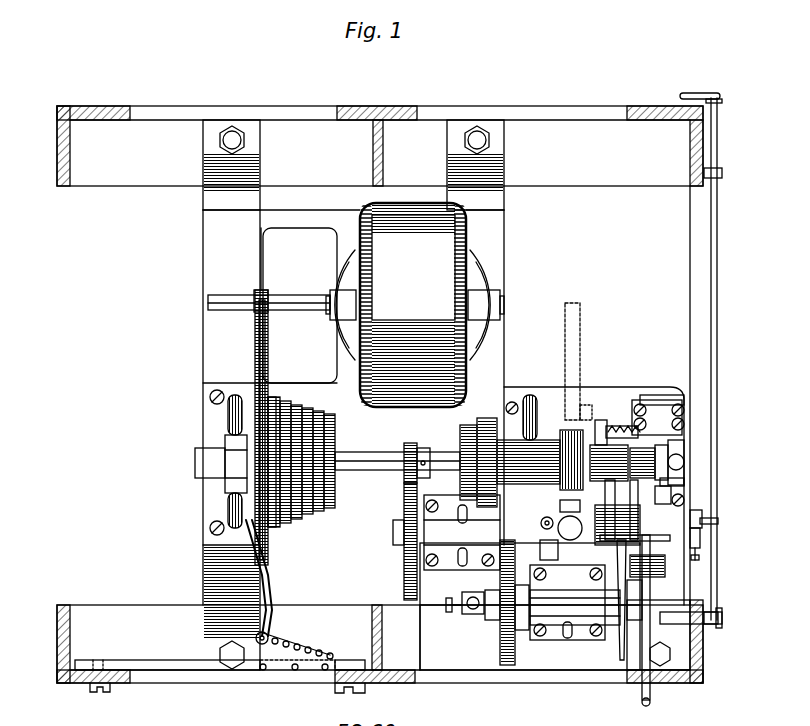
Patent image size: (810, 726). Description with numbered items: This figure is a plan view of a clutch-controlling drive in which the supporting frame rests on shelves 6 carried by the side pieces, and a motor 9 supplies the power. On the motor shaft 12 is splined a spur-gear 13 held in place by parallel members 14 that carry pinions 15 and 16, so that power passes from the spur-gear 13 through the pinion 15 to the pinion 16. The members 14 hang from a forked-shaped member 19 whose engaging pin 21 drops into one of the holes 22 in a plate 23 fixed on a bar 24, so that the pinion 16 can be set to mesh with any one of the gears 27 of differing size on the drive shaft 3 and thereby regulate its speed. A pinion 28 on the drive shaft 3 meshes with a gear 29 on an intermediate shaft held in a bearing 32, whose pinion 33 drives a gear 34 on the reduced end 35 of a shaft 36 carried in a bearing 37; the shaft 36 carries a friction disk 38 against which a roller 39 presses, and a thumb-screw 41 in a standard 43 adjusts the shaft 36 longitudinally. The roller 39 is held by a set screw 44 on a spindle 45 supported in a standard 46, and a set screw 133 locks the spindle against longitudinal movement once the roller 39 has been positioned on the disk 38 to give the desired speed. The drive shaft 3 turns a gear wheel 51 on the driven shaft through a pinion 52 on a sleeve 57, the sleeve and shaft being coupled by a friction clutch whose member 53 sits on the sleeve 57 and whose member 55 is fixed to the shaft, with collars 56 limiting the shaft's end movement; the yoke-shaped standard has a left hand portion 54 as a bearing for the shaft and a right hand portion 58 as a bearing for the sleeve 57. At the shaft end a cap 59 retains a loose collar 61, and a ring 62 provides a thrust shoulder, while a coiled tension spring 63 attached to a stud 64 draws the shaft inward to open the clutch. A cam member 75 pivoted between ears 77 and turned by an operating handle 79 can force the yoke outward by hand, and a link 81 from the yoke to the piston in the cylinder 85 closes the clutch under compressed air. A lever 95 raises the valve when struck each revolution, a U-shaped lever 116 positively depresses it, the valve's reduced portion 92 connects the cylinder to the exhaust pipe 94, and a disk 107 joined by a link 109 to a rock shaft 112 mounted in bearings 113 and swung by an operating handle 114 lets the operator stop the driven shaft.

The drive shaft 3 is at (362, 460).
The shelves 6 is at (133, 178).
The motor 9 is at (415, 305).
The motor shaft 12 is at (286, 296).
The spur-gear 13 is at (256, 293).
The parallel members 14 is at (257, 362).
The pinion 15 is at (264, 352).
The pinion 16 is at (280, 396).
The forked-shaped member 19 is at (263, 550).
The engaging pin 21 is at (268, 640).
The holes 22 is at (306, 646).
The plate 23 is at (318, 662).
The bar 24 is at (150, 660).
The gears 27 is at (325, 510).
The pinion 28 is at (408, 450).
The gear 29 is at (404, 512).
The bearing 32 is at (445, 560).
The pinion 33 is at (490, 553).
The gear 34 is at (500, 640).
The reduced end 35 is at (458, 640).
The shaft 36 is at (560, 625).
The bearing 37 is at (540, 553).
The friction disk 38 is at (619, 630).
The roller 39 is at (655, 580).
The thumb-screw 41 is at (446, 606).
The standard 43 is at (470, 609).
The set screw 44 is at (660, 562).
The spindle 45 is at (650, 600).
The standard 46 is at (700, 660).
The gear wheel 51 is at (580, 324).
The pinion 52 is at (592, 440).
The clutch member 53 is at (488, 420).
The left hand portion 54 is at (630, 430).
The clutch member 55 is at (460, 445).
The collars 56 is at (226, 445).
The sleeve 57 is at (612, 430).
The right hand portion 58 is at (528, 462).
The cap 59 is at (650, 455).
The collar 61 is at (668, 462).
The ring 62 is at (672, 488).
The coiled tension spring 63 is at (648, 430).
The stud 64 is at (670, 430).
The cam member 75 is at (684, 462).
The ears 77 is at (684, 490).
The operating handle 79 is at (682, 466).
The link 81 is at (670, 508).
The cylinder 85 is at (617, 525).
The reduced portion 92 is at (564, 530).
The exhaust pipe 94 is at (546, 517).
The lever 95 is at (705, 540).
The disk 107 is at (720, 522).
The link 109 is at (700, 525).
The rock shaft 112 is at (718, 268).
The bearings 113 is at (722, 173).
The operating handle 114 is at (700, 93).
The U-shaped lever 116 is at (562, 432).
The set screw 133 is at (722, 625).